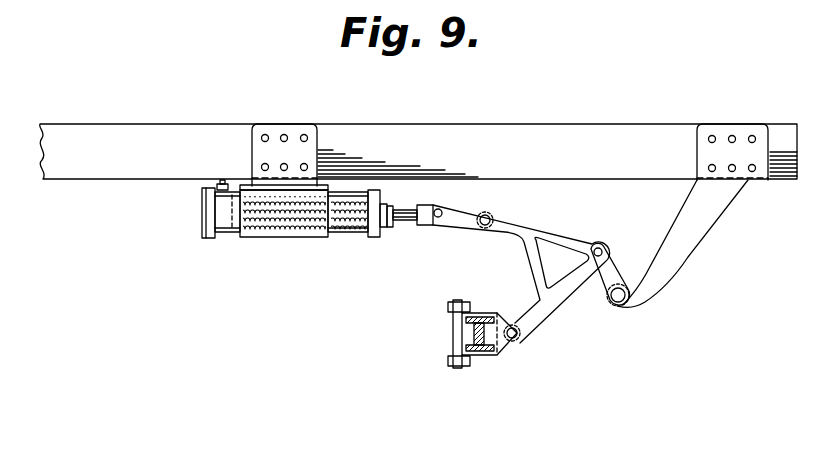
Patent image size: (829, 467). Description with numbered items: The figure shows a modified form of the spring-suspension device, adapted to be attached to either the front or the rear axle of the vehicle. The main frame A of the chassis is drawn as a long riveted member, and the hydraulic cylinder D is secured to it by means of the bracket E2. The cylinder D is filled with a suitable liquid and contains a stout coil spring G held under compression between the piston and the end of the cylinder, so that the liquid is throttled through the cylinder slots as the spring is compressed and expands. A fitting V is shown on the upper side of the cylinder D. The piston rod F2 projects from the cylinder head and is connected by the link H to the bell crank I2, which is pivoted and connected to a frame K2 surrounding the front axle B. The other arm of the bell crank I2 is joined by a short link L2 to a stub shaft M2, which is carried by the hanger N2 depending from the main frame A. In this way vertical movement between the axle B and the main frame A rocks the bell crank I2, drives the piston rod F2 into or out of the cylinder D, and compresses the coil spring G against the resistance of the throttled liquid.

The main frame A is at (617, 131).
The bracket E2 is at (284, 126).
The valve fitting V is at (222, 180).
The hydraulic cylinder D is at (217, 238).
The coil spring G is at (341, 238).
The piston rod F2 is at (405, 227).
The link H is at (465, 221).
The bell crank I2 is at (561, 233).
The frame K2 is at (509, 356).
The front axle B is at (492, 356).
The link L2 is at (611, 272).
The pivot pin M2 is at (620, 308).
The hanger bracket N2 is at (685, 250).